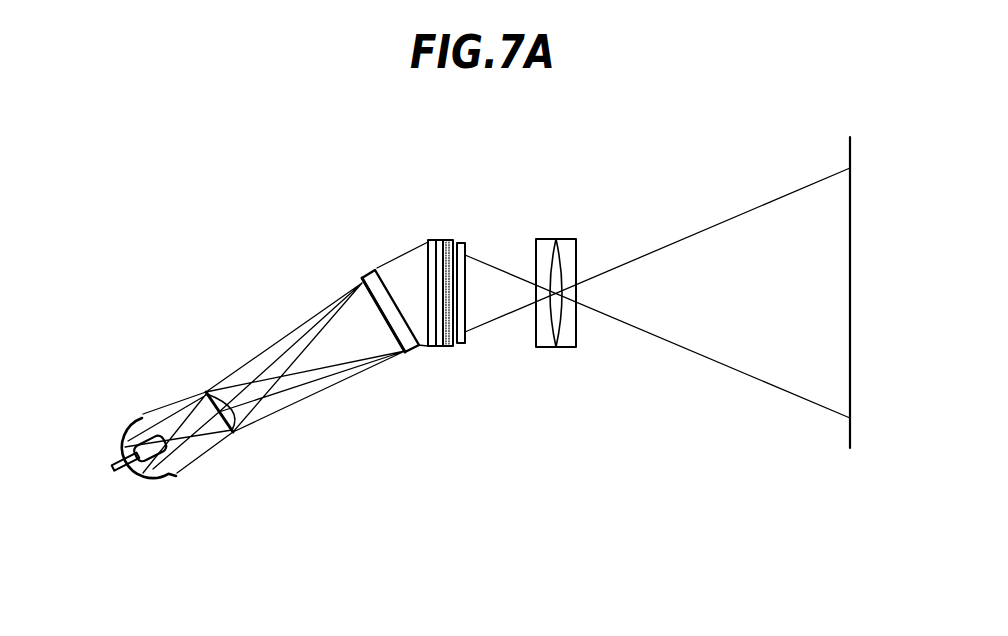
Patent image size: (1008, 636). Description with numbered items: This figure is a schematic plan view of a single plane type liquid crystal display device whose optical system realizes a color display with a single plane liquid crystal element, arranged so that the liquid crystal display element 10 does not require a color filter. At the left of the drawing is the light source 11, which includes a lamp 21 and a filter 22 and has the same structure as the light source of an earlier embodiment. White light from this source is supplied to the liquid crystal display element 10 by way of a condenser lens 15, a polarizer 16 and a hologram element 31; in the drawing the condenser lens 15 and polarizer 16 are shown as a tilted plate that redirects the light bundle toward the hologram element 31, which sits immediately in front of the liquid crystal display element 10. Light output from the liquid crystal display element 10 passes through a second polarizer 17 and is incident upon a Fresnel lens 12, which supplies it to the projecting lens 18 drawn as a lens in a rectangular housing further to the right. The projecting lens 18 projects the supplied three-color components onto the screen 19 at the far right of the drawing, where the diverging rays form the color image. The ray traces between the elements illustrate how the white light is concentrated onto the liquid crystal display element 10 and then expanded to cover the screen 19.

The light source lamp 11 is at (109, 427).
The lamp 21 is at (141, 471).
The filter 22 is at (204, 391).
The polarizer 16 is at (377, 269).
The condenser lens 15 is at (410, 355).
The hologram element 31 is at (428, 247).
The liquid crystal display element 10 is at (443, 241).
The polarizer 17 is at (457, 243).
The Fresnel lens 12 is at (466, 262).
The projecting lens 18 is at (555, 350).
The screen 19 is at (851, 148).